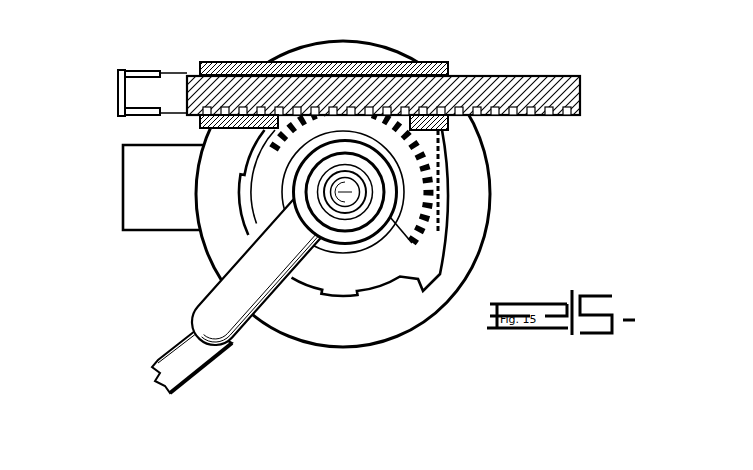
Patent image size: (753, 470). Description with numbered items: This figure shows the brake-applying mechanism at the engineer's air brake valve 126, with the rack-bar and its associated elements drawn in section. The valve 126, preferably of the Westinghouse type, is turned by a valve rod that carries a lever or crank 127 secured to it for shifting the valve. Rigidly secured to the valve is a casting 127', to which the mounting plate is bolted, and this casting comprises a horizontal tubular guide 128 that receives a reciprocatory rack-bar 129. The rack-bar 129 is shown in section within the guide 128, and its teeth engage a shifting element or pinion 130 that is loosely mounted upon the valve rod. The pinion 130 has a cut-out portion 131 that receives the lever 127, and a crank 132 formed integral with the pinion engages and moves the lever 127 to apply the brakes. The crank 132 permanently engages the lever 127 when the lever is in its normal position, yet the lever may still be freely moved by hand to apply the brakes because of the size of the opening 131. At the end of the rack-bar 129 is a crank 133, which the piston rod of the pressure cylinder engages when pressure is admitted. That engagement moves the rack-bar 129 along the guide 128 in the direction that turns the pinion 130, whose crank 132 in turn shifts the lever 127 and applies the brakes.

The engineer's air brake valve 126 is at (347, 192).
The lever or crank 127 is at (259, 274).
The casting 127' is at (467, 128).
The horizontal tubular guide 128 is at (375, 62).
The rack-bar 129 is at (580, 100).
The shifting element or pinion 130 is at (420, 192).
The cut-out portion 131 is at (387, 240).
The crank 132 is at (243, 245).
The crank 133 is at (117, 92).